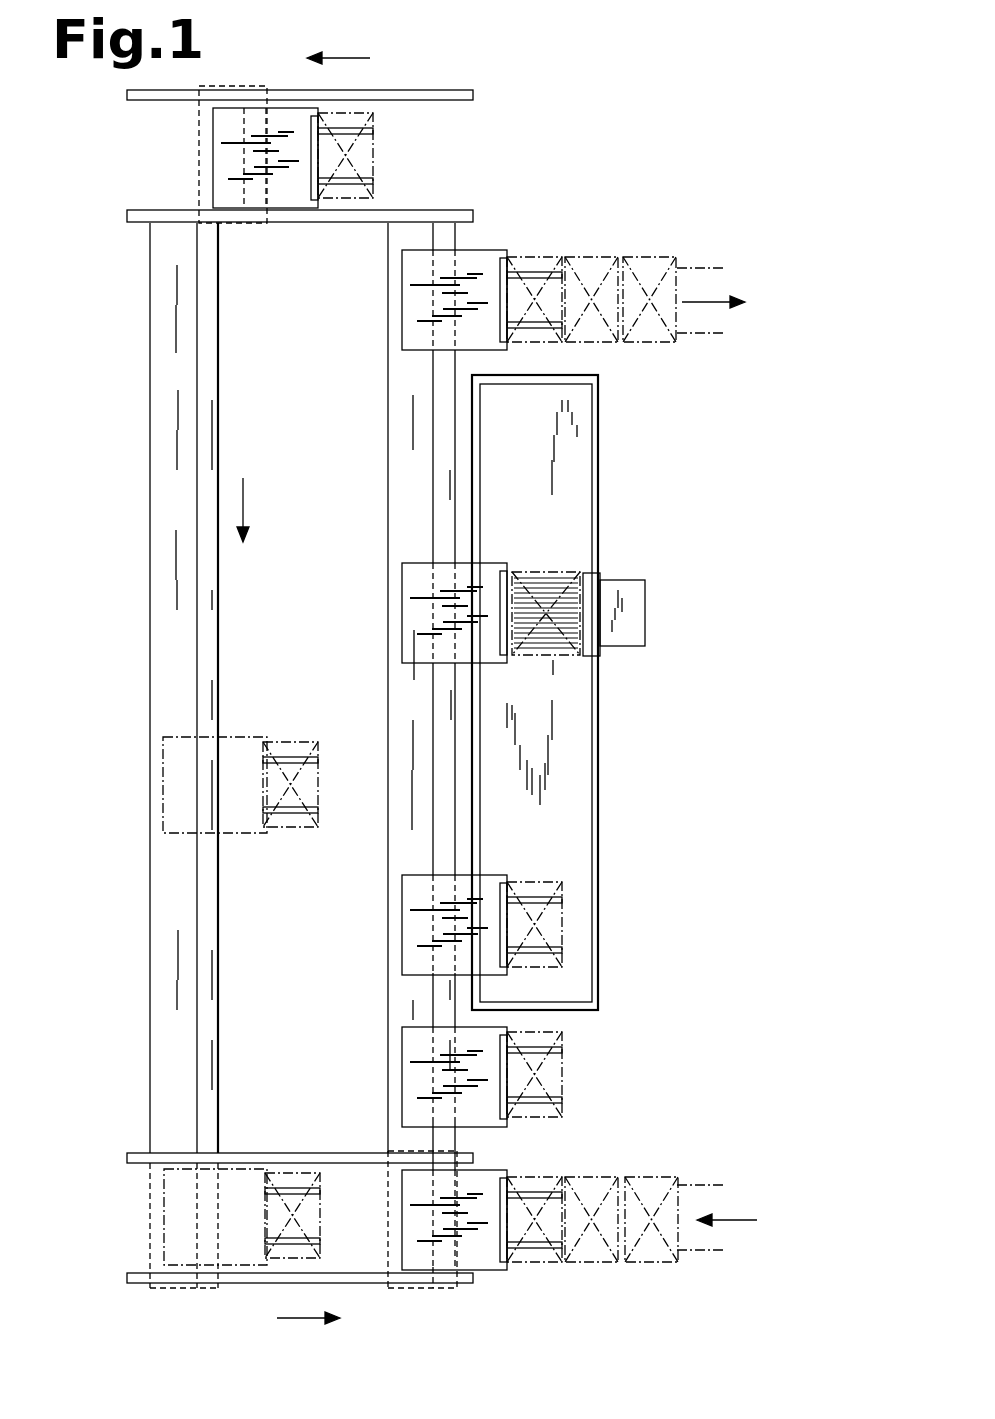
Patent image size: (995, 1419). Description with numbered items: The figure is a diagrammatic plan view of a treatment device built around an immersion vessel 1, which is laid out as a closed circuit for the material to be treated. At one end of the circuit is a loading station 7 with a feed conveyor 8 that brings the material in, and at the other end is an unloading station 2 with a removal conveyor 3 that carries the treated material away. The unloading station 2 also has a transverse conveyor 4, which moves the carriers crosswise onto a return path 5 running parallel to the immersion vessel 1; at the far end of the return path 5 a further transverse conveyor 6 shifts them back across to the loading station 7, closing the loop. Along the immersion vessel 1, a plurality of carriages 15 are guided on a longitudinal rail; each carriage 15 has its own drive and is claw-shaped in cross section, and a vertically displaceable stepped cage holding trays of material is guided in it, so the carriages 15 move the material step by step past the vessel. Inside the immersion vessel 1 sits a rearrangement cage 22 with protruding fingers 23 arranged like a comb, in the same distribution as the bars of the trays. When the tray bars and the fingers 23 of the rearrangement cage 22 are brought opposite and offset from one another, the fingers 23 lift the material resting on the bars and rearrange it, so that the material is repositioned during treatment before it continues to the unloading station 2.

The immersion vessel 1 is at (570, 735).
The unloading station 2 is at (545, 237).
The removal conveyor 3 is at (702, 262).
The transverse conveyor 4 is at (230, 168).
The return path 5 is at (205, 610).
The further transverse conveyor 6 is at (140, 1277).
The loading station 7 is at (548, 1195).
The feed conveyor 8 is at (700, 1258).
The carriage 15 is at (483, 902).
The rearrangement cage 22 is at (590, 592).
The fingers 23 is at (562, 578).